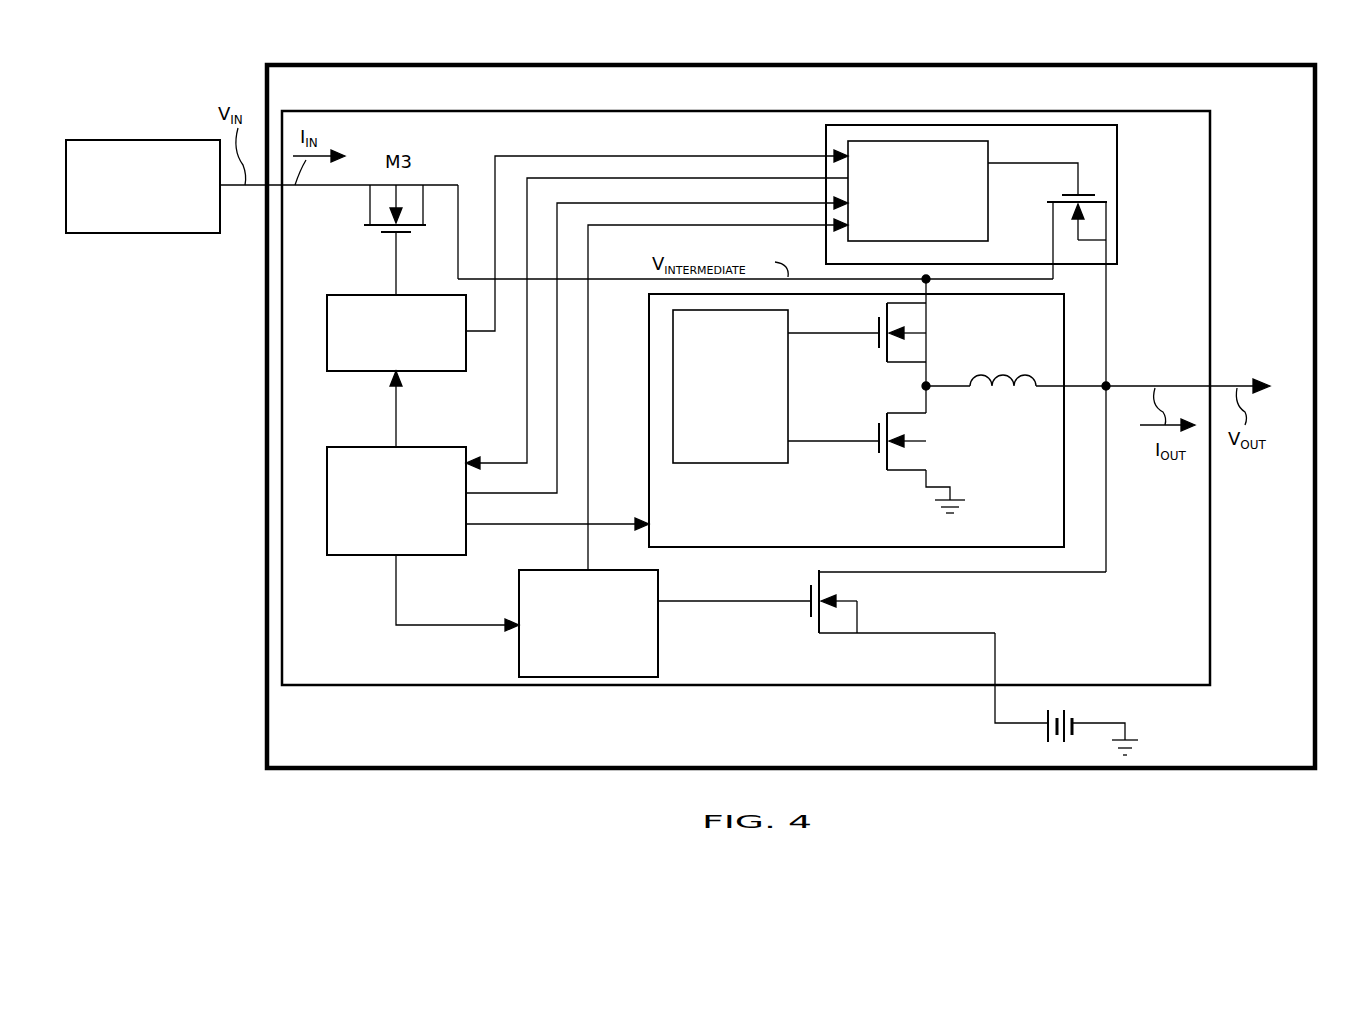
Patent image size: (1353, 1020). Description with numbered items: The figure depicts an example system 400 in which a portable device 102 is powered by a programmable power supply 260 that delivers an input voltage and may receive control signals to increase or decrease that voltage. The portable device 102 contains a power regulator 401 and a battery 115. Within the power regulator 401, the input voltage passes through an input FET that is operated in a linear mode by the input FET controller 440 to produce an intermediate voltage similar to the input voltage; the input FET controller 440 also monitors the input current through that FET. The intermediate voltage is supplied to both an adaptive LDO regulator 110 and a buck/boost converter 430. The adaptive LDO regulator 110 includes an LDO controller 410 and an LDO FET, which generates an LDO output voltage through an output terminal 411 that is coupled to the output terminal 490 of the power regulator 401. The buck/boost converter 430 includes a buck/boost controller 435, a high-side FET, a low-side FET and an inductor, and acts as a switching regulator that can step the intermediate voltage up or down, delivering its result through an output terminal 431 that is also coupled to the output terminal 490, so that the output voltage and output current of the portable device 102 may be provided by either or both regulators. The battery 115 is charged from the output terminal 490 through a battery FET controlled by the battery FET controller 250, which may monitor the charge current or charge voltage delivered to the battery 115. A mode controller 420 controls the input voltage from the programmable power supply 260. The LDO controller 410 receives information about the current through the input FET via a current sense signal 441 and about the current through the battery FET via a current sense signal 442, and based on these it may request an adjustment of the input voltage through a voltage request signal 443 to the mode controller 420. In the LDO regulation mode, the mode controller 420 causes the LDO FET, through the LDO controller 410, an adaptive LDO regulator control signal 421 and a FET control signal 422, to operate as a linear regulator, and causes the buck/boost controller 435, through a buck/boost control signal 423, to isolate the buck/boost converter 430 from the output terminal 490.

The system 400 is at (170, 74).
The portable device 102 is at (266, 592).
The power regulator 401 is at (530, 110).
The programmable power supply 260 is at (161, 220).
The adaptive LDO regulator 110 is at (826, 130).
The LDO controller 410 is at (935, 225).
The FET control signal 422 is at (1033, 163).
The output terminal 411 is at (1107, 280).
The current sense signal 441 is at (622, 157).
The voltage request signal 443 is at (527, 412).
The adaptive LDO regulator control signal 421 is at (720, 203).
The current sense signal 442 is at (720, 225).
The VIN FET controller 440 is at (413, 367).
The mode controller 420 is at (413, 536).
The buck/boost control signal 423 is at (624, 523).
The buck/boost converter 430 is at (903, 542).
The buck/boost controller 435 is at (747, 435).
The output terminal 431 is at (1079, 388).
The output terminal 490 is at (1214, 386).
The battery FET controller 250 is at (605, 658).
The battery 115 is at (1062, 708).